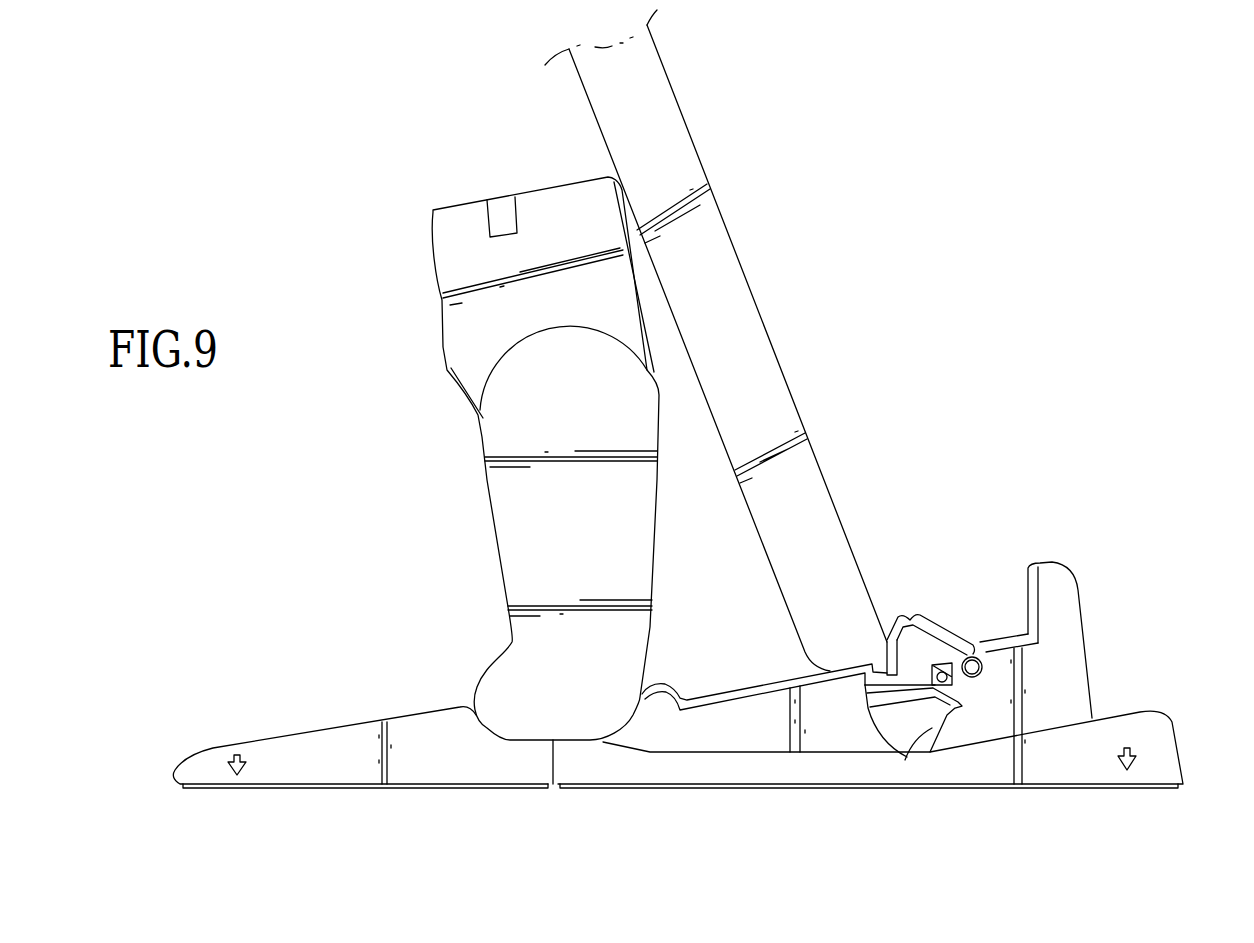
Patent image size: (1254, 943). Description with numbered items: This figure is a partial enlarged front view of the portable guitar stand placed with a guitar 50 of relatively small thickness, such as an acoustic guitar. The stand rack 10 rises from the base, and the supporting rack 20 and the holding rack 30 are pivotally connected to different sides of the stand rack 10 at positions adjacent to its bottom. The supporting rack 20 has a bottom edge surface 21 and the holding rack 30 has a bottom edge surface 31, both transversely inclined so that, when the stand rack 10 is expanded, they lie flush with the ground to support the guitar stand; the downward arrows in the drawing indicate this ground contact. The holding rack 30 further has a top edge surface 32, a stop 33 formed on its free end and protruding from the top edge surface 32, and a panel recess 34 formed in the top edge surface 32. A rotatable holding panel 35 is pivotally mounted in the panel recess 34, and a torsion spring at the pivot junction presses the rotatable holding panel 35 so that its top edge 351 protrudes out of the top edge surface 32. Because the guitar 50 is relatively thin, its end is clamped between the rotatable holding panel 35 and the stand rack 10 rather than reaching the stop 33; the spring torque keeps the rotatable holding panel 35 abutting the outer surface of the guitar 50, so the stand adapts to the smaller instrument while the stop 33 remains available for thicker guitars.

The stand rack 10 is at (449, 229).
The guitar 50 is at (738, 287).
The supporting rack 20 is at (331, 740).
The bottom edge surface 21 is at (347, 787).
The holding rack 30 is at (1157, 730).
The bottom edge surface 31 is at (955, 787).
The top edge surface 32 is at (753, 688).
The stop 33 is at (1062, 593).
The panel recess 34 is at (910, 760).
The rotatable holding panel 35 is at (907, 653).
The top edge 351 is at (893, 612).